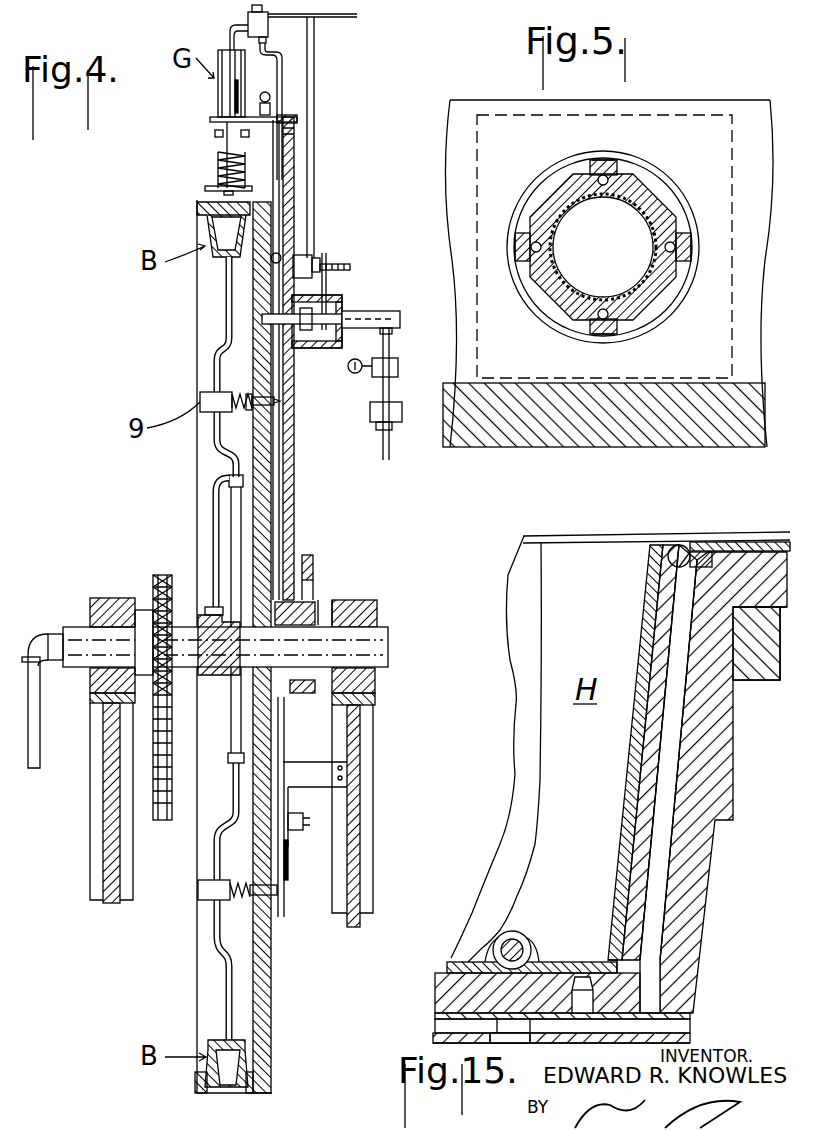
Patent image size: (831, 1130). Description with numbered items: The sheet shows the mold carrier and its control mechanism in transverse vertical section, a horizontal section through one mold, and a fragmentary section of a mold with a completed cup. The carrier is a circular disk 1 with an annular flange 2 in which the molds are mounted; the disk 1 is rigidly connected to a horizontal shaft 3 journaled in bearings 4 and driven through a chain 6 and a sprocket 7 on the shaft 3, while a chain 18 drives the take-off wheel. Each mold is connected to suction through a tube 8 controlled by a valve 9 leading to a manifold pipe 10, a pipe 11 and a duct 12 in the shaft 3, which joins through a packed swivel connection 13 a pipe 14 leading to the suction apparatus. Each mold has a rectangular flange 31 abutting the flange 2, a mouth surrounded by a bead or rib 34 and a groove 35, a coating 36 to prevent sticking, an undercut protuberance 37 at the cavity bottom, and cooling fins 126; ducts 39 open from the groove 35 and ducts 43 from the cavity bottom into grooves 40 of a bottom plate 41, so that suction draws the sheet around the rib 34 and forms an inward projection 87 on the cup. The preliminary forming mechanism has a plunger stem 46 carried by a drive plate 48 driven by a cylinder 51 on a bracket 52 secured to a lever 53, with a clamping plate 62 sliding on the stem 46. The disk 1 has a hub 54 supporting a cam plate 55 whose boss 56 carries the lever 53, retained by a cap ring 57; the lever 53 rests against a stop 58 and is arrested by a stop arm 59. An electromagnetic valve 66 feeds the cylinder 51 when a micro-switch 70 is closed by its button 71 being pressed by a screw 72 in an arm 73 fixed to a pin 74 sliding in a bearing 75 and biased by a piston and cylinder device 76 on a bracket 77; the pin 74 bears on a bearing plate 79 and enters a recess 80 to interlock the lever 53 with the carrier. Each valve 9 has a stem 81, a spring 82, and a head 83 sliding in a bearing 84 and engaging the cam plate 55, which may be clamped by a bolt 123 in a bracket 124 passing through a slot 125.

In FIG. 4, the circular plate or disk 1 is at (255, 455).
In FIG. 5, the circular plate or disk 1 is at (728, 420).
In FIG. 4, the annular flange 2 is at (202, 222).
In FIG. 5, the annular flange 2 is at (460, 108).
In FIG. 4, the horizontal shaft 3 is at (378, 640).
In FIG. 4, the bearings 4 is at (375, 670).
In FIG. 4, the chain 6 is at (155, 815).
In FIG. 4, the sprocket 7 is at (150, 595).
In FIG. 4, the tube 8 is at (212, 372).
In FIG. 4, the valve 9 is at (200, 890).
In FIG. 4, the manifold pipe 10 is at (232, 510).
In FIG. 4, the pipe 11 is at (213, 527).
In FIG. 4, the duct 12 is at (216, 680).
In FIG. 4, the packed swivel connection 13 is at (58, 636).
In FIG. 4, the pipe 14 is at (36, 700).
In FIG. 4, the chain 18 is at (389, 352).
In FIG. 5, the rectangular flange 31 is at (650, 115).
In FIG. 15, the bead or rib 34 is at (658, 564).
In FIG. 15, the groove 35 is at (655, 575).
In FIG. 5, the coating 36 is at (568, 245).
In FIG. 15, the coating 36 is at (452, 967).
In FIG. 15, the undercut protuberance 37 is at (522, 935).
In FIG. 5, the ducts 39 is at (598, 172).
In FIG. 15, the ducts 39 is at (668, 845).
In FIG. 15, the grooves 40 is at (445, 1024).
In FIG. 15, the bottom plate 41 is at (692, 1032).
In FIG. 15, the ducts 43 is at (580, 978).
In FIG. 4, the stem portion 46 is at (218, 152).
In FIG. 4, the drive plate 48 is at (215, 134).
In FIG. 4, the cylinder 51 is at (230, 95).
In FIG. 4, the bracket 52 is at (290, 117).
In FIG. 4, the combined mounting and actuating first element or lever 53 is at (292, 432).
In FIG. 4, the tubular hub portion 54 is at (283, 708).
In FIG. 4, the cam plate 55 is at (280, 485).
In FIG. 4, the tubular boss 56 is at (300, 693).
In FIG. 4, the cap ring 57 is at (375, 697).
In FIG. 4, the stop 58 is at (302, 560).
In FIG. 4, the stop arm 59 is at (314, 572).
In FIG. 4, the clamping plate 62 is at (210, 188).
In FIG. 4, the electromagnetic valve 66 is at (262, 22).
In FIG. 4, the micro-switch 70 is at (303, 264).
In FIG. 4, the operating button 71 is at (312, 268).
In FIG. 4, the screw 72 is at (335, 266).
In FIG. 4, the arm 73 is at (327, 285).
In FIG. 4, the pin 74 is at (318, 340).
In FIG. 4, the bearing 75 is at (287, 336).
In FIG. 4, the piston and cylinder device 76 is at (375, 318).
In FIG. 4, the bracket 77 is at (361, 352).
In FIG. 4, the circular bearing plate 79 is at (262, 262).
In FIG. 4, the recess 80 is at (262, 330).
In FIG. 4, the stem 81 is at (232, 408).
In FIG. 4, the spring 82 is at (238, 392).
In FIG. 4, the head 83 is at (278, 401).
In FIG. 4, the bearing 84 is at (250, 412).
In FIG. 15, the projection 87 is at (498, 940).
In FIG. 4, the bolt 123 is at (308, 822).
In FIG. 4, the bracket 124 is at (330, 775).
In FIG. 4, the slot 125 is at (283, 882).
In FIG. 5, the cooling fins or ribs 126 is at (610, 178).